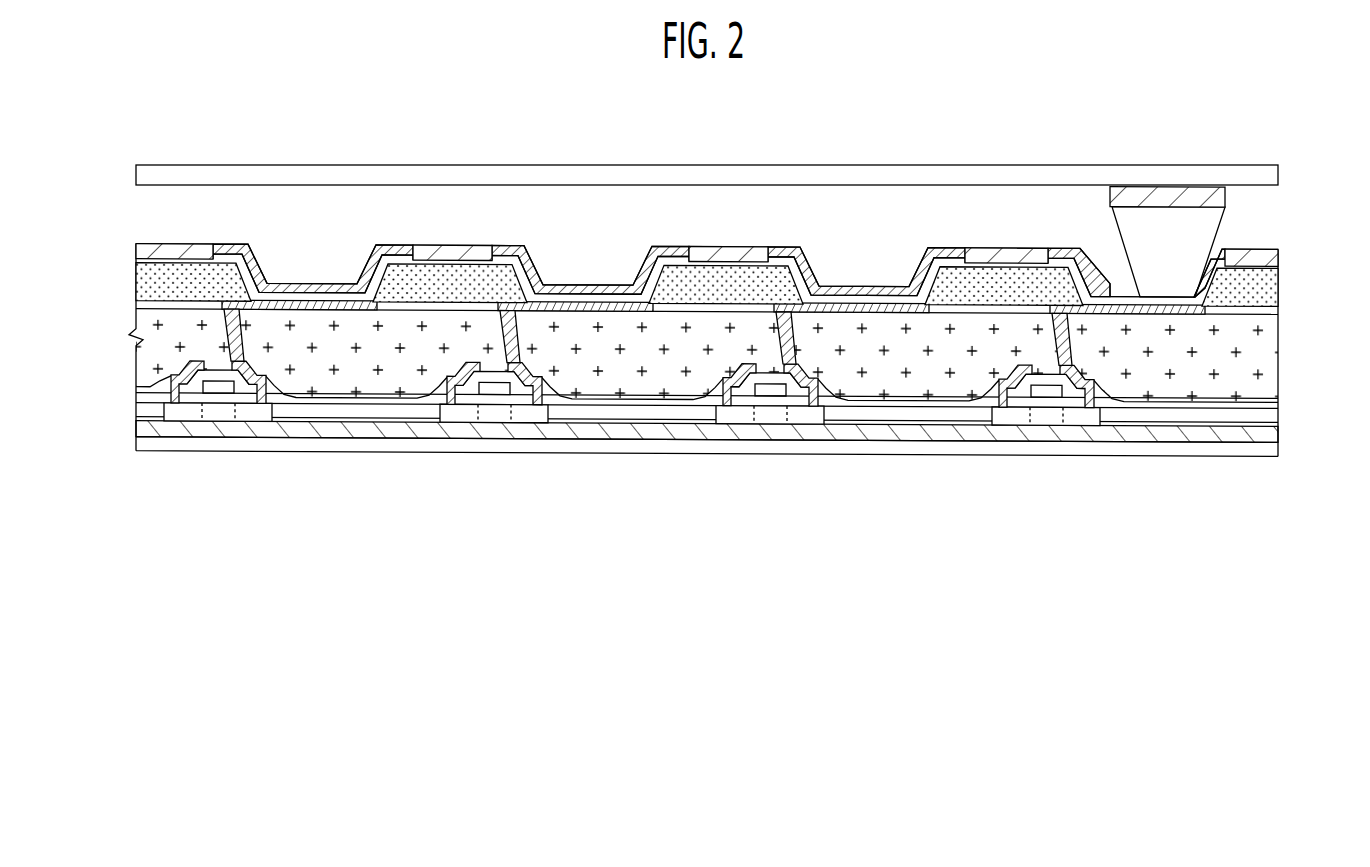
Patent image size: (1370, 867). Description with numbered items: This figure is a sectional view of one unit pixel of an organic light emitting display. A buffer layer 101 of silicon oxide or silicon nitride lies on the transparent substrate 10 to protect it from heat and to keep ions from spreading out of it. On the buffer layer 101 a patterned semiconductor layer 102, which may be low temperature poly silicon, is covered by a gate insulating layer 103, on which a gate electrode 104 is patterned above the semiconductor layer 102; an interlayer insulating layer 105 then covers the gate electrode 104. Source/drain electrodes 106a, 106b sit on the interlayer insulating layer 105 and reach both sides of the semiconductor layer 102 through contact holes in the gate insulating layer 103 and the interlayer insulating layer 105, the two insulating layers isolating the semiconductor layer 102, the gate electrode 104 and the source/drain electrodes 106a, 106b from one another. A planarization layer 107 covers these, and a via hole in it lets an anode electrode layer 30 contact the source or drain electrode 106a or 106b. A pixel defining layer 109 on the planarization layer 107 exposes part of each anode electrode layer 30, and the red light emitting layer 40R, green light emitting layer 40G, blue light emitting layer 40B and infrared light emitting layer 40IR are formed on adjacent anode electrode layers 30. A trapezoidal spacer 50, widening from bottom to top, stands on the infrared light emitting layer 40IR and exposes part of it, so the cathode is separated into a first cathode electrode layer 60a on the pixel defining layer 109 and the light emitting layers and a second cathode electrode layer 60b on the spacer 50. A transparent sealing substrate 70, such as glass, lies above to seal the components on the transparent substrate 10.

The transparent substrate 10 is at (137, 448).
The buffer layer 101 is at (137, 427).
The semiconductor layer 102 is at (220, 392).
The gate insulating layer 103 is at (140, 412).
The gate electrode 104 is at (241, 407).
The interlayer insulating layer 105 is at (147, 389).
The source/drain electrode 106a is at (192, 384).
The source/drain electrode 106b is at (289, 384).
The planarization layer 107 is at (137, 322).
The pixel defining layer 109 is at (137, 278).
The anode electrode layer 30 is at (343, 300).
The red light emitting layer 40R is at (287, 297).
The green light emitting layer 40G is at (586, 296).
The blue light emitting layer 40B is at (851, 296).
The infrared light emitting layer 40IR is at (1083, 277).
The spacer 50 is at (1203, 229).
The first cathode electrode layer 60a is at (433, 246).
The second cathode electrode layer 60b is at (1227, 198).
The sealing substrate 70 is at (945, 166).